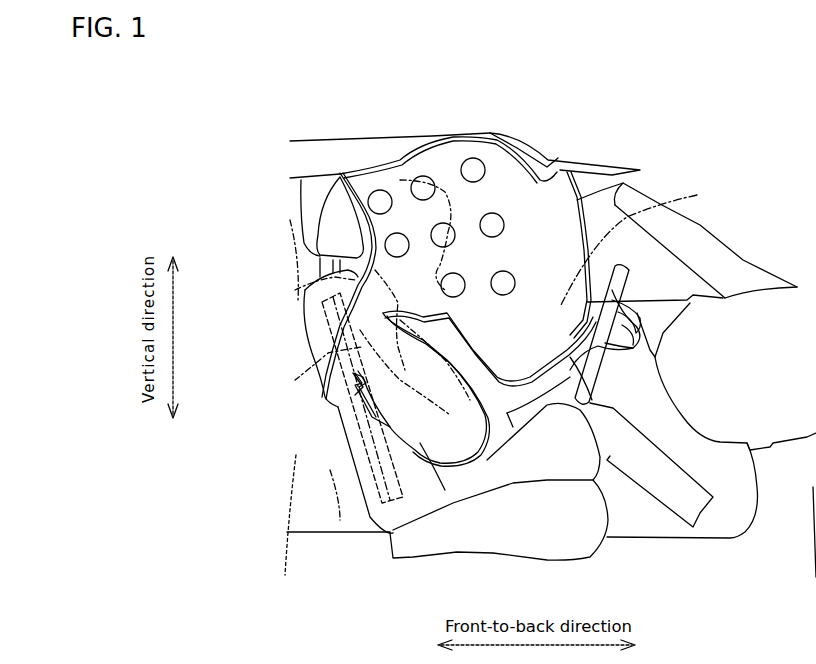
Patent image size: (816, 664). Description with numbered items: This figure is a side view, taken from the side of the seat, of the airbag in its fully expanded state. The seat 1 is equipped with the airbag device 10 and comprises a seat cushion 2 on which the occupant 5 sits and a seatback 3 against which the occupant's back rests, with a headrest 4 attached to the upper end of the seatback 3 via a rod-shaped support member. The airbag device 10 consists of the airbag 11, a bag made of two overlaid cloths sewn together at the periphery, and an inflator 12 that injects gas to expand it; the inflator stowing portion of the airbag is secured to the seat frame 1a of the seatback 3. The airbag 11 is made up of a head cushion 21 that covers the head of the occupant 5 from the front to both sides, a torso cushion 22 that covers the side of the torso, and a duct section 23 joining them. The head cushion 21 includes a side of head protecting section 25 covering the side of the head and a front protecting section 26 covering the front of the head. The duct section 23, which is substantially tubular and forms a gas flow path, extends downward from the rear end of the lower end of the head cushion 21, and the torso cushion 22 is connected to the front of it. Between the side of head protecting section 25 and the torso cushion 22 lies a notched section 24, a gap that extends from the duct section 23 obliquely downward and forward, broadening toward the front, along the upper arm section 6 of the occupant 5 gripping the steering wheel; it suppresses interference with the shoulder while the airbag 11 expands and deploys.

The seat 1 is at (360, 520).
The seat frame 1a is at (353, 467).
The seat cushion 2 is at (453, 543).
The seatback 3 is at (313, 283).
The headrest 4 is at (323, 223).
The occupant 5 is at (523, 467).
The upper arm section 6 is at (427, 417).
The airbag device 10 is at (237, 350).
The airbag 11 is at (317, 370).
The inflator 12 is at (317, 413).
The head cushion 21 is at (612, 97).
The torso cushion 22 is at (357, 433).
The duct section 23 is at (323, 295).
The notched section 24 is at (643, 246).
The side of head protecting section 25 is at (477, 198).
The front protecting section 26 is at (583, 247).